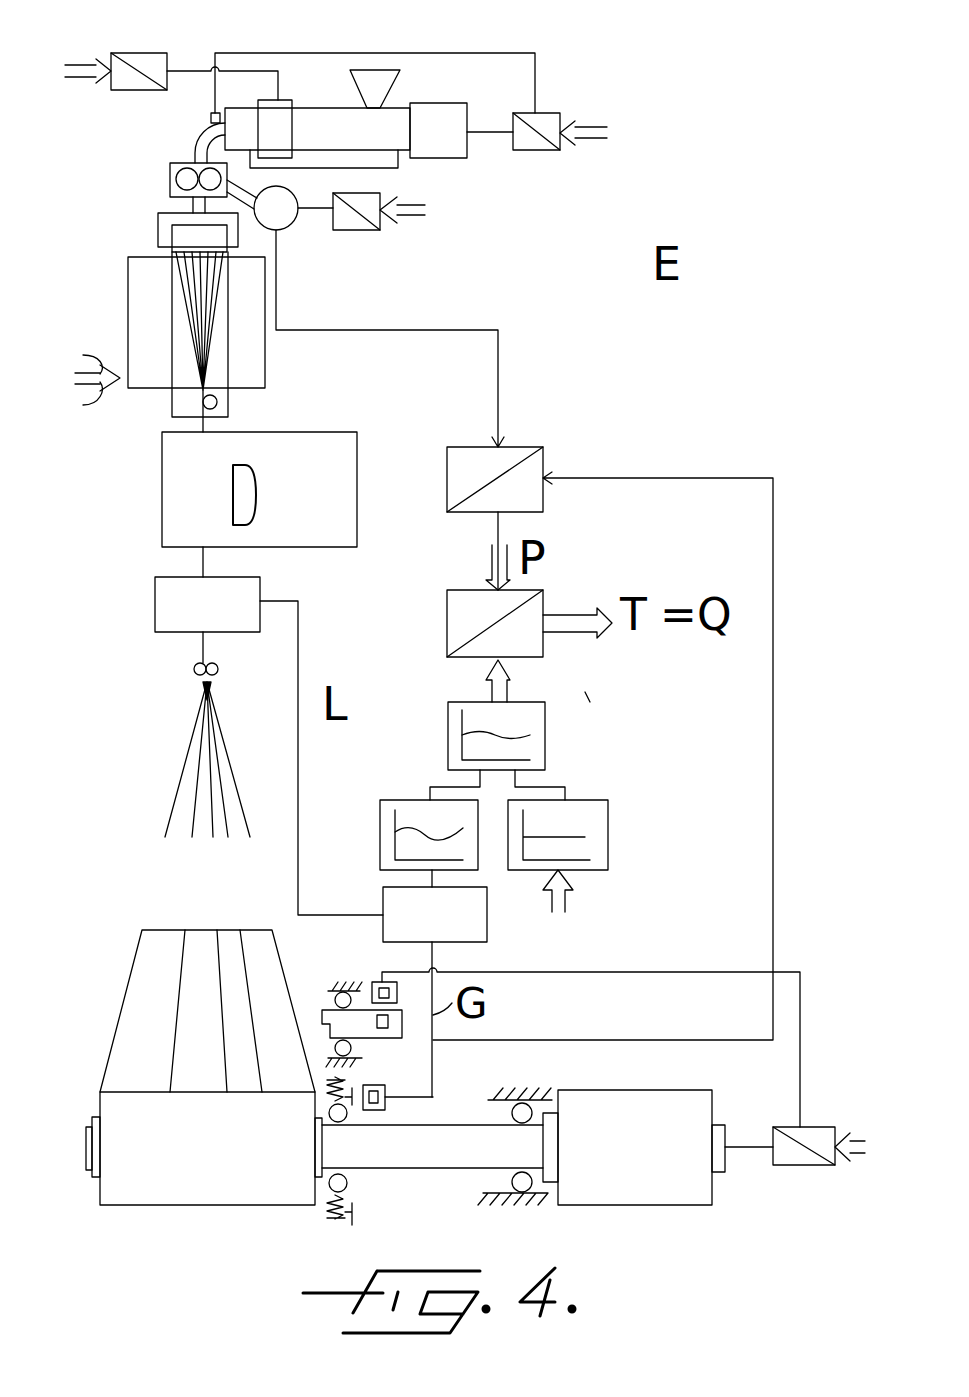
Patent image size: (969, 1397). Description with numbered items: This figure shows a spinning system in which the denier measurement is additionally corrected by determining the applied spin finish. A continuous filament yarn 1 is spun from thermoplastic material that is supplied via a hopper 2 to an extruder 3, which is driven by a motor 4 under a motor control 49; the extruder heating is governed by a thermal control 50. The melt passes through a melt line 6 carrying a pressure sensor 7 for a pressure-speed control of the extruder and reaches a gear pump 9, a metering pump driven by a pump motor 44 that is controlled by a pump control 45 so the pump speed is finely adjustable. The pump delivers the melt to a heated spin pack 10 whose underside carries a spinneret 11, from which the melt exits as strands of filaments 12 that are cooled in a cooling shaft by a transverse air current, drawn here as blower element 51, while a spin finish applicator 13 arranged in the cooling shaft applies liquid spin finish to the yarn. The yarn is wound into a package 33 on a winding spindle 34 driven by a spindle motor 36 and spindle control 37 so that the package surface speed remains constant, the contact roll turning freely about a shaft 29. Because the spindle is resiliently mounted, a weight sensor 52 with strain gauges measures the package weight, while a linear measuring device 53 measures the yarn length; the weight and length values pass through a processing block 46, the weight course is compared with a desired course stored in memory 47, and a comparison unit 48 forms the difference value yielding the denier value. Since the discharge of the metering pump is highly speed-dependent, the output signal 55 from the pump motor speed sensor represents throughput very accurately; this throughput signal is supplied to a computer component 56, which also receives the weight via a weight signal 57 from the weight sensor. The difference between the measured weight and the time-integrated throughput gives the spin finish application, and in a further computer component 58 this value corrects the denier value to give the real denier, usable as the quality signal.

The continuous filament yarn 1 is at (200, 553).
The hopper 2 is at (377, 72).
The extruder 3 is at (390, 112).
The motor 4 is at (445, 158).
The melt line 6 is at (198, 133).
The pressure sensor 7 is at (211, 118).
The gear pump 9 is at (170, 180).
The spin pack 10 is at (158, 222).
The spinneret 11 is at (172, 240).
The strands of filaments 12 is at (183, 290).
The spin finish applicator 13 is at (203, 396).
The shaft 29 is at (347, 992).
The package 33 is at (157, 1193).
The winding spindle 34 is at (478, 1150).
The spindle motor 36 is at (637, 1195).
The spindle control 37 is at (790, 1165).
The pump motor 44 is at (290, 230).
The pump control 45 is at (365, 230).
The computer (G/L) 46 is at (470, 853).
The memory 47 is at (608, 830).
The comparison unit 48 is at (545, 748).
The motor control 49 is at (540, 150).
The thermal control 50 is at (148, 53).
The air blower 51 is at (83, 355).
The weight sensor 52 is at (378, 1110).
The linear measuring device 53 is at (175, 603).
The output signal 55 is at (345, 330).
The computer component 56 is at (527, 447).
The weight signal 57 is at (778, 505).
The computer component 58 is at (543, 598).